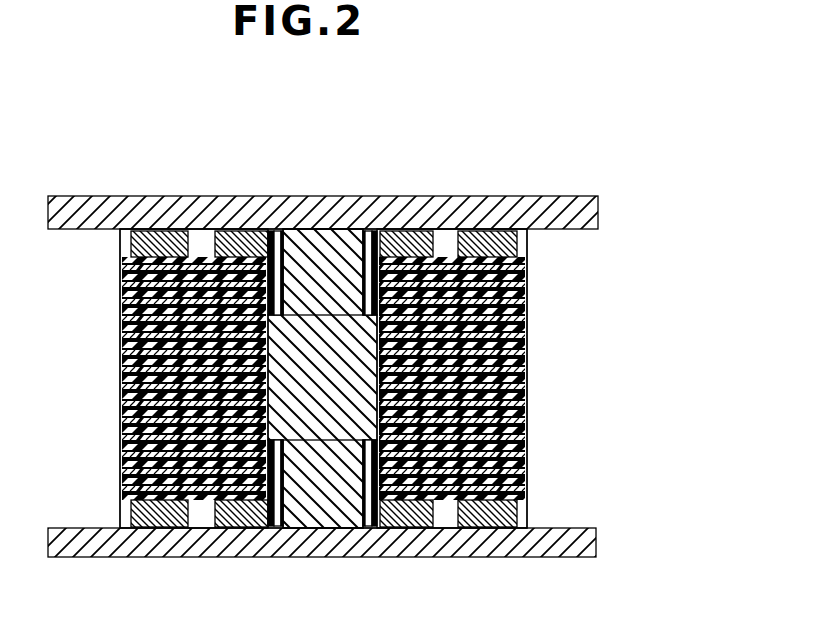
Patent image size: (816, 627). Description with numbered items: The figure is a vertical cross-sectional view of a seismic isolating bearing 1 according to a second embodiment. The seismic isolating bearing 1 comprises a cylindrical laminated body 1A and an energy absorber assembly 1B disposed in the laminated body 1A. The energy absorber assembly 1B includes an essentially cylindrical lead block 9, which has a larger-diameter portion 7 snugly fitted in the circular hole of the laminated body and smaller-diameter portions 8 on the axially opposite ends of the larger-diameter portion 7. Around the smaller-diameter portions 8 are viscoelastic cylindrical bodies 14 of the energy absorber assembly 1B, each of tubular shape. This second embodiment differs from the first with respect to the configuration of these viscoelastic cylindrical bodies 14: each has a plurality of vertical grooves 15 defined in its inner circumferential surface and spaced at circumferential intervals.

The seismic isolating bearing 1 is at (552, 186).
The cylindrical laminated body 1A is at (540, 355).
The energy absorber assembly 1B is at (367, 206).
The larger-diameter portion 7 is at (122, 370).
The smaller-diameter portions 8 is at (343, 245).
The lead block 9 is at (310, 245).
The viscoelastic cylindrical bodies 14 is at (368, 247).
The vertical grooves 15 is at (277, 240).